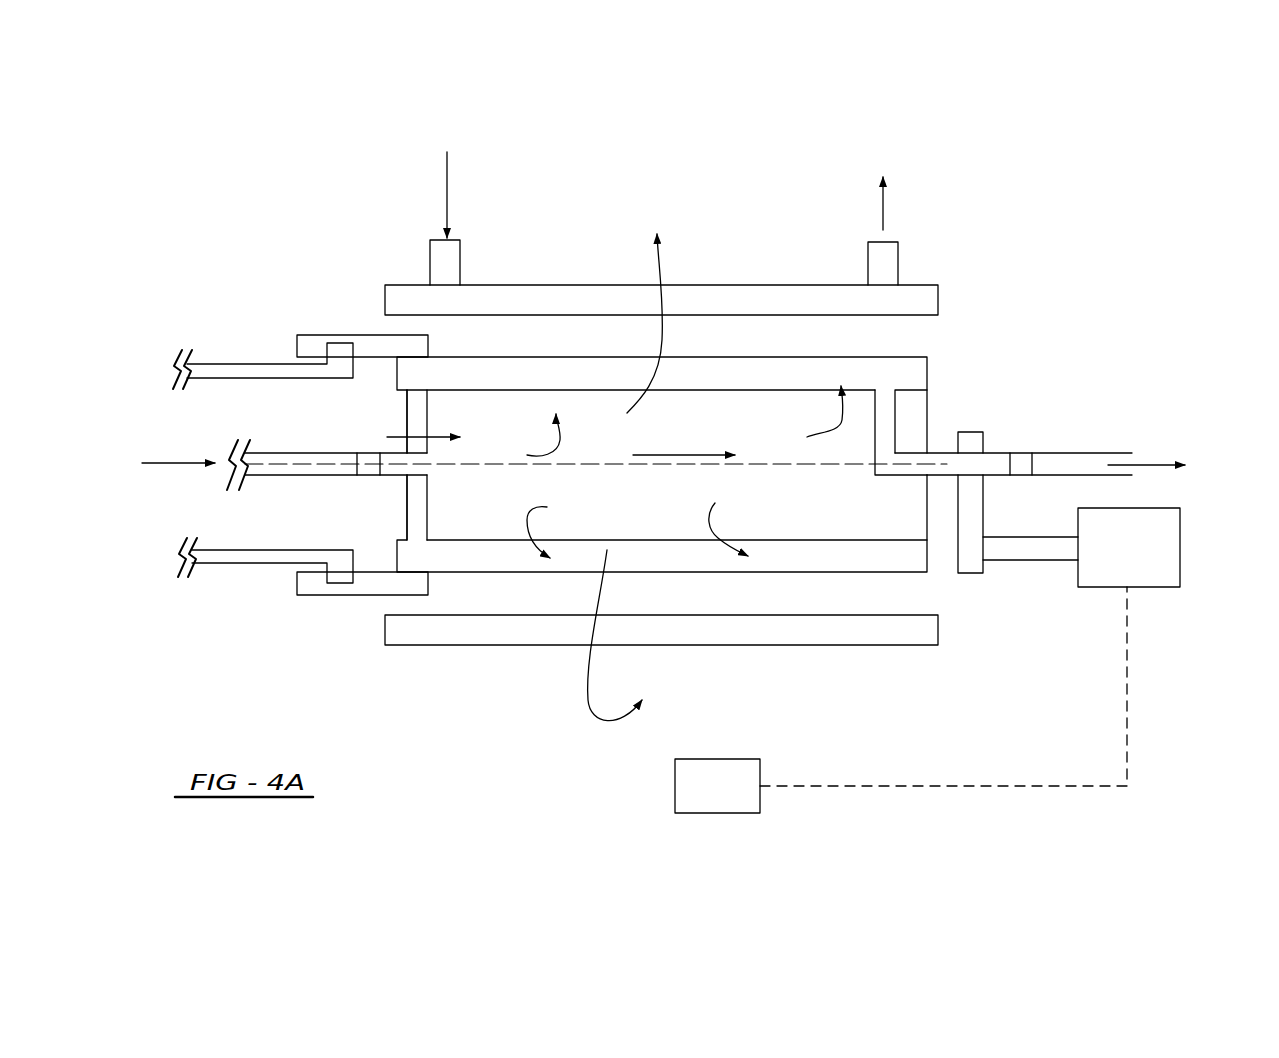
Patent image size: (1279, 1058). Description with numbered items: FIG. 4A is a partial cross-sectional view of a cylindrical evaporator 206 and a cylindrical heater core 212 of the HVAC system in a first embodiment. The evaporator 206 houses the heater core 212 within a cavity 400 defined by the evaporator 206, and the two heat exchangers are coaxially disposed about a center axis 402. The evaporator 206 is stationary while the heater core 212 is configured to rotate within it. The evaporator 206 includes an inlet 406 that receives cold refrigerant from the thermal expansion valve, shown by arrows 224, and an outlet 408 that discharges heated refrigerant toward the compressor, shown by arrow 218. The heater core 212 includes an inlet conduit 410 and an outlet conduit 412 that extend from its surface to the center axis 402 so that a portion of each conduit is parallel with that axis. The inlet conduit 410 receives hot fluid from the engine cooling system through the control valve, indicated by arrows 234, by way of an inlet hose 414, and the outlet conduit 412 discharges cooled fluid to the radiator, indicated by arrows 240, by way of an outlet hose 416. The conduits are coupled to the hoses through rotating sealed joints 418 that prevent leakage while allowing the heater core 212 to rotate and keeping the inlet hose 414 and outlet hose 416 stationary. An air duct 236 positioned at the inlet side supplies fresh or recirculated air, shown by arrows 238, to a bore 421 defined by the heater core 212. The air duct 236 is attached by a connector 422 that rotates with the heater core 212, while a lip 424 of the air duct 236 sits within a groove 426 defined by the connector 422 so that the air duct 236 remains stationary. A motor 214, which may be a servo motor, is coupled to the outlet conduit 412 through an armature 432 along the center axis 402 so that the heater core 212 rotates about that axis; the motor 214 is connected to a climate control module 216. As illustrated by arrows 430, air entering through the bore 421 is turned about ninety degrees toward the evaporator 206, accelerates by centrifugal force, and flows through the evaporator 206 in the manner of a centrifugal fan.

The evaporator 206 is at (720, 285).
The heater core 212 is at (672, 573).
The motor 214 is at (1152, 587).
The climate control module (CCM) 216 is at (718, 759).
The arrow 218 is at (883, 215).
The arrows 224 is at (447, 198).
The arrows 234 is at (167, 463).
The air duct 236 is at (233, 364).
The arrows 238 is at (427, 433).
The arrows 240 is at (1145, 463).
The cavity 400 is at (940, 330).
The center axis 402 is at (580, 465).
The inlet 406 is at (460, 262).
The outlet 408 is at (898, 257).
The inlet conduit 410 is at (427, 497).
The outlet conduit 412 is at (895, 423).
The inlet hose 414 is at (318, 475).
The outlet hose 416 is at (1107, 455).
The rotating sealed joints 418 is at (370, 460).
The bore 421 is at (402, 411).
The connector 422 is at (428, 348).
The lip 424 is at (338, 577).
The groove 426 is at (352, 578).
The arrows 430 is at (653, 257).
The armature 432 is at (983, 517).